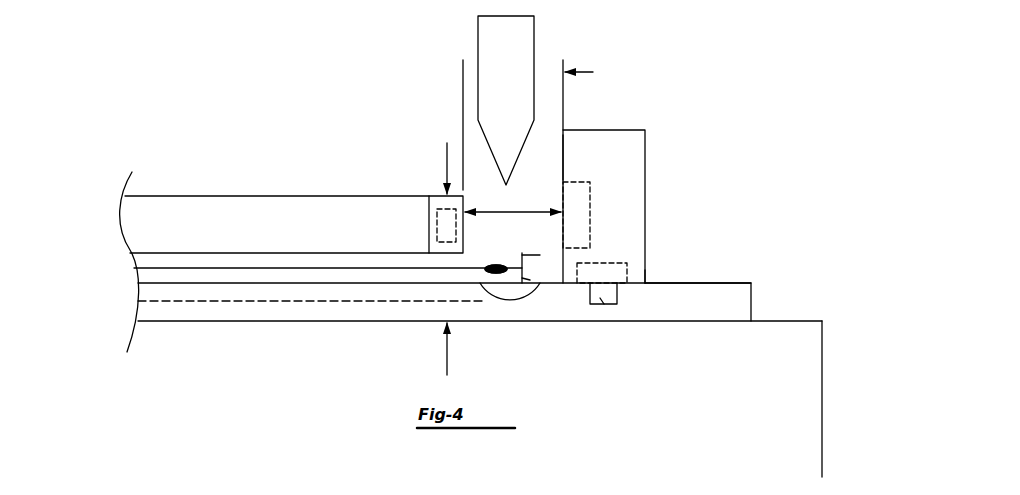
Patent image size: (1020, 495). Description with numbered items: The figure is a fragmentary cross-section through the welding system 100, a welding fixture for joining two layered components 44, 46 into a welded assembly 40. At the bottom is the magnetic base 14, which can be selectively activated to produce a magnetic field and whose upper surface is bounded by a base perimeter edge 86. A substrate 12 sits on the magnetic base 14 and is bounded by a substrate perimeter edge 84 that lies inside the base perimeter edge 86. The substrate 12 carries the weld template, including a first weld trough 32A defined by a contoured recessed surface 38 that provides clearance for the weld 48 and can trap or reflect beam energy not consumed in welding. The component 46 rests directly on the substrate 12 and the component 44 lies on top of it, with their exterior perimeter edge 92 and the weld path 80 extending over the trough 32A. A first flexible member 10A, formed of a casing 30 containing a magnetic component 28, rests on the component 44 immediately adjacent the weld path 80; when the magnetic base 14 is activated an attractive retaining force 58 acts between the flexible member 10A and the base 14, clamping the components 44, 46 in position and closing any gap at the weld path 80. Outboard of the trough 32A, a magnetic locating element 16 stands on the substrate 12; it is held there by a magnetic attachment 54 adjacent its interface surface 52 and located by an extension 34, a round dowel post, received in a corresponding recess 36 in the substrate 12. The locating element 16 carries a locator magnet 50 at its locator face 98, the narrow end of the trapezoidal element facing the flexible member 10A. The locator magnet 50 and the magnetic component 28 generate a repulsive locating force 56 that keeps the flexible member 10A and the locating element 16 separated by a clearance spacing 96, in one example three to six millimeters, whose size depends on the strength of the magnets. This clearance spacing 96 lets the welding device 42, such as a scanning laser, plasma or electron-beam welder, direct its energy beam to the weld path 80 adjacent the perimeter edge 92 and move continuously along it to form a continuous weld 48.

The first flexible member 10A is at (241, 196).
The substrate 12 is at (752, 300).
The magnetic base 14 is at (823, 362).
The magnetic locating element 16 is at (605, 130).
The magnetic component 28 is at (437, 225).
The casing 30 is at (311, 196).
The first weld trough 32A is at (252, 302).
The locator interface 34 is at (618, 296).
The template interface 36 is at (600, 298).
The recessed surface 38 is at (508, 294).
The welded assembly 40 is at (118, 265).
The welding device 42 is at (534, 40).
The component 44 is at (522, 256).
The component 46 is at (522, 278).
The weld 48 is at (495, 266).
The weld path 80 is at (496, 269).
The locator magnet 50 is at (592, 216).
The interface surface 52 is at (641, 279).
The magnetic attachment 54 is at (597, 263).
The repulsive magnetic force 56 is at (488, 200).
The attractive magnetic force 58 is at (445, 160).
The substrate perimeter edge 84 is at (750, 272).
The base perimeter edge 86 is at (823, 308).
The perimeter edge 92 is at (524, 253).
The clearance spacing 96 is at (461, 72).
The locator face 98 is at (566, 135).
The welding system 100 is at (738, 140).